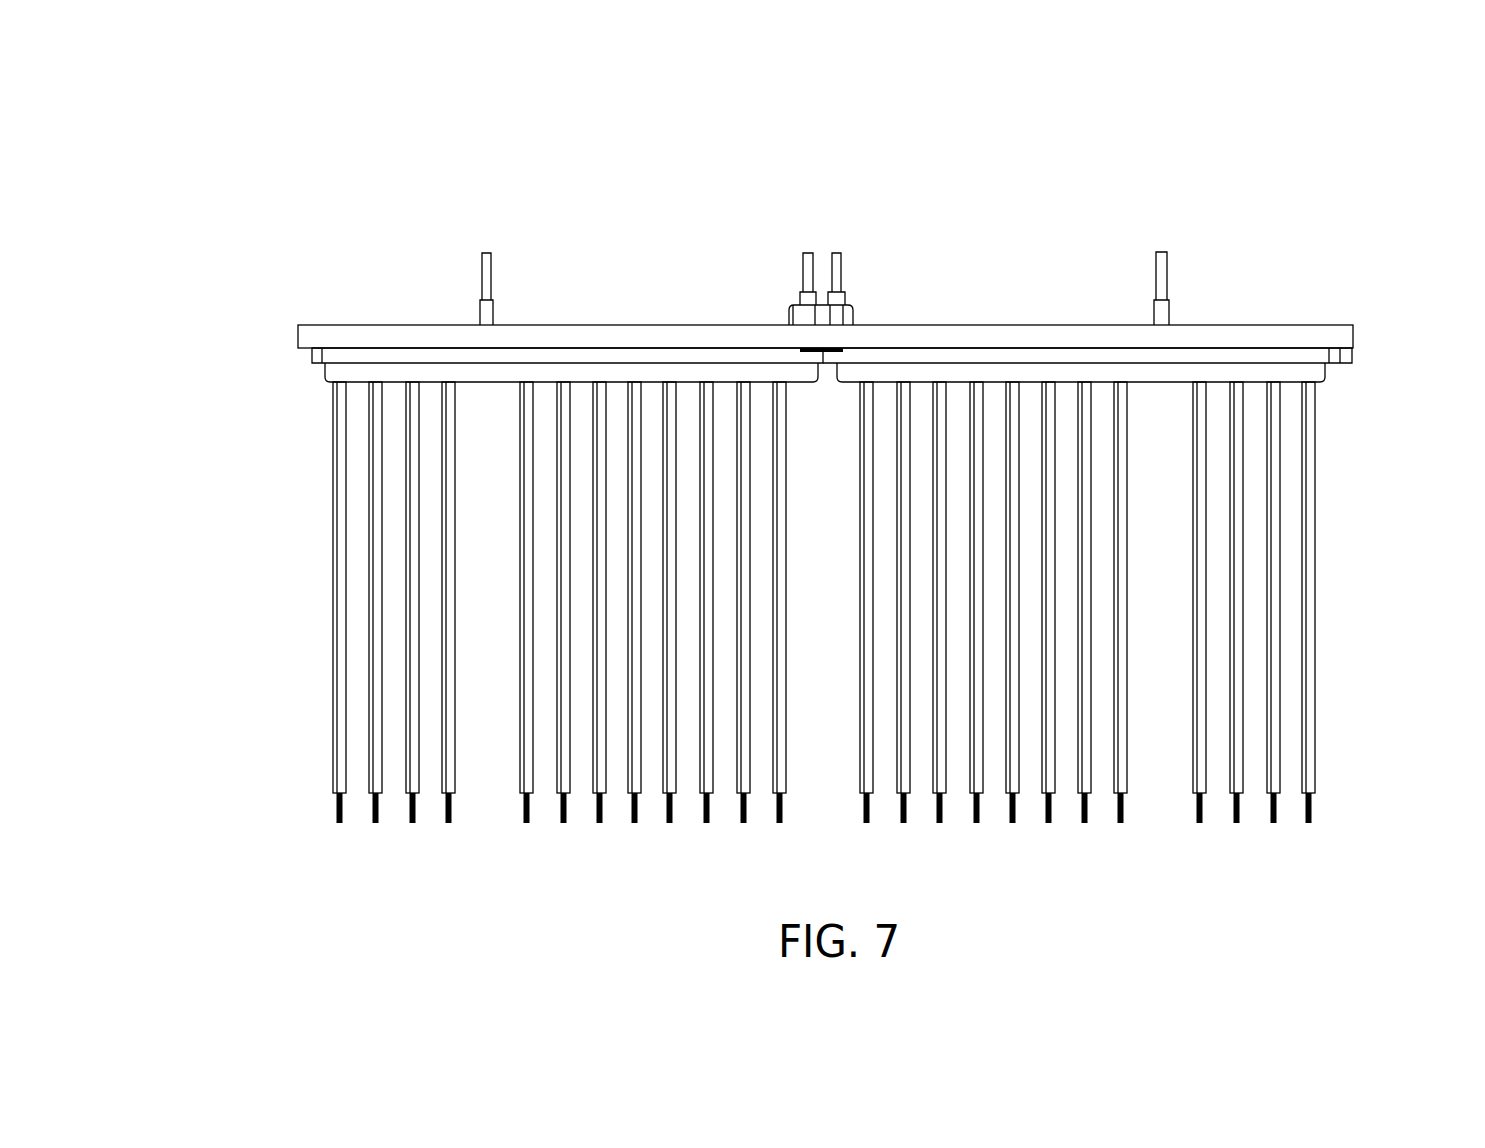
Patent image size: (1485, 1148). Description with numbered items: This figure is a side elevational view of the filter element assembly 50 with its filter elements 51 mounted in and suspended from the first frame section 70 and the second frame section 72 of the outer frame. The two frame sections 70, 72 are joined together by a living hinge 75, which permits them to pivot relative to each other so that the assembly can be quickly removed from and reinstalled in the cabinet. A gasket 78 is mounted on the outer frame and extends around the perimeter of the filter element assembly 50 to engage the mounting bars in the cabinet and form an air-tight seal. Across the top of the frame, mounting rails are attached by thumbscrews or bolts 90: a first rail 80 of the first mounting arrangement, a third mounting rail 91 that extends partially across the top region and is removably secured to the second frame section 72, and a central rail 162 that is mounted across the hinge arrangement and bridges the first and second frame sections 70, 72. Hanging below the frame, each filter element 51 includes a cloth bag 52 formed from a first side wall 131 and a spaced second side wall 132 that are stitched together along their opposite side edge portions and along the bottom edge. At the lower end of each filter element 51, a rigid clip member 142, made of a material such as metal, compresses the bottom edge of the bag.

The filter element assembly 50 is at (805, 214).
The filter elements 51 is at (482, 838).
The cloth bags 52 is at (333, 567).
The first frame section 70 is at (308, 358).
The second frame section 72 is at (1345, 357).
The living hinge 75 is at (800, 349).
The gasket 78 is at (382, 333).
The first rail 80 is at (488, 314).
The bolts 90 is at (490, 263).
The third mounting rail 91 is at (1167, 312).
The first side wall 131 is at (1313, 775).
The second side wall 132 is at (1302, 777).
The clip member 142 is at (373, 818).
The central rail 162 is at (853, 308).